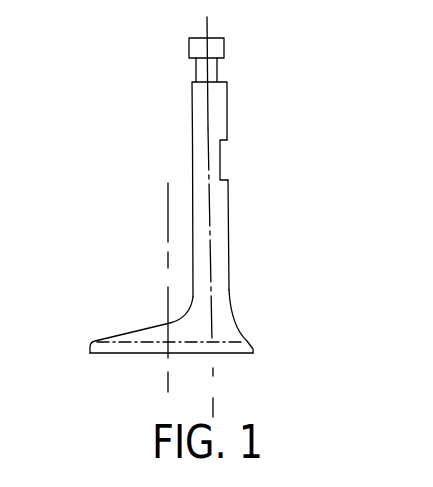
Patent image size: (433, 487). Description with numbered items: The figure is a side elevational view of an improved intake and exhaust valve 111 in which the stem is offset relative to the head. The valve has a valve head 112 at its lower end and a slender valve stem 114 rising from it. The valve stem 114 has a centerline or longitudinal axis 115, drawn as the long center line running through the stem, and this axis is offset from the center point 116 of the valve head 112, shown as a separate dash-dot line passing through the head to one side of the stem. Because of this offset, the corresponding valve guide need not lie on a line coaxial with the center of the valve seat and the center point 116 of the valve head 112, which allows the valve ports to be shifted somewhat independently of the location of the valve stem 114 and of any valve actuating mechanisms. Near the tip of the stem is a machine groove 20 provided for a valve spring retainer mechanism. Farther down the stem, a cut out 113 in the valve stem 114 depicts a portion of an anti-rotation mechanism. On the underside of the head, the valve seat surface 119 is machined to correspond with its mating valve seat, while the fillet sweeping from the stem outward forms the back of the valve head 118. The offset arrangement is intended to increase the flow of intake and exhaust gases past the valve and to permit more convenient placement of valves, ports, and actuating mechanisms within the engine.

The machine groove 20 is at (218, 69).
The intake and exhaust valve 111 is at (229, 251).
The valve head 112 is at (227, 354).
The cut out 113 is at (222, 157).
The valve stem 114 is at (192, 115).
The longitudinal axis 115 is at (207, 30).
The center point of the valve head 116 is at (165, 375).
The back of the valve head 118 is at (144, 324).
The valve seat surface 119 is at (248, 344).